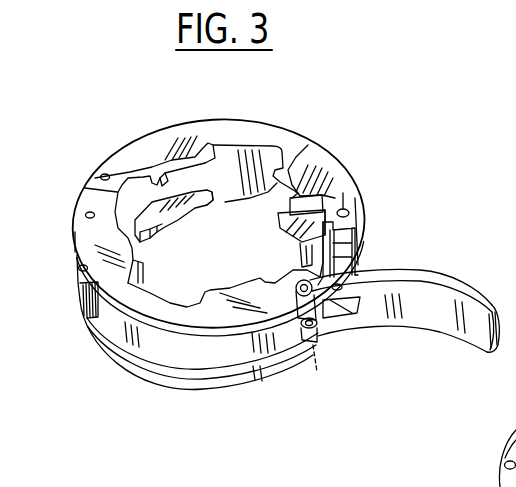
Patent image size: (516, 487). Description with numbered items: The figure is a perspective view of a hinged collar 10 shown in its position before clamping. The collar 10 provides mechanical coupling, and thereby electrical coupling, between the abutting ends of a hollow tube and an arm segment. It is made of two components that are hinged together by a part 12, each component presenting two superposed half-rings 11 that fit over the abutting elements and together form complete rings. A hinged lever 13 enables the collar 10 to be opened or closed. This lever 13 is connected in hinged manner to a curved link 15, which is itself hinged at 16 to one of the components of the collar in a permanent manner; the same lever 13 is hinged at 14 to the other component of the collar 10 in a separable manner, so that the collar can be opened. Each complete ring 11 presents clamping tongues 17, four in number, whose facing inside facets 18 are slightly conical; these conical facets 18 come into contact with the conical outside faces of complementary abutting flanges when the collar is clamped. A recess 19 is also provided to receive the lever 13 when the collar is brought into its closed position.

The hinged collar 10 is at (120, 124).
The half-rings 11 is at (170, 143).
The hinge part 12 is at (80, 300).
The hinged lever 13 is at (432, 274).
The separable hinge 14 is at (317, 372).
The curved link 15 is at (365, 264).
The permanent hinge 16 is at (351, 199).
The clamping tongues 17 is at (143, 156).
The inside facets 18 is at (204, 205).
The recess 19 is at (268, 360).